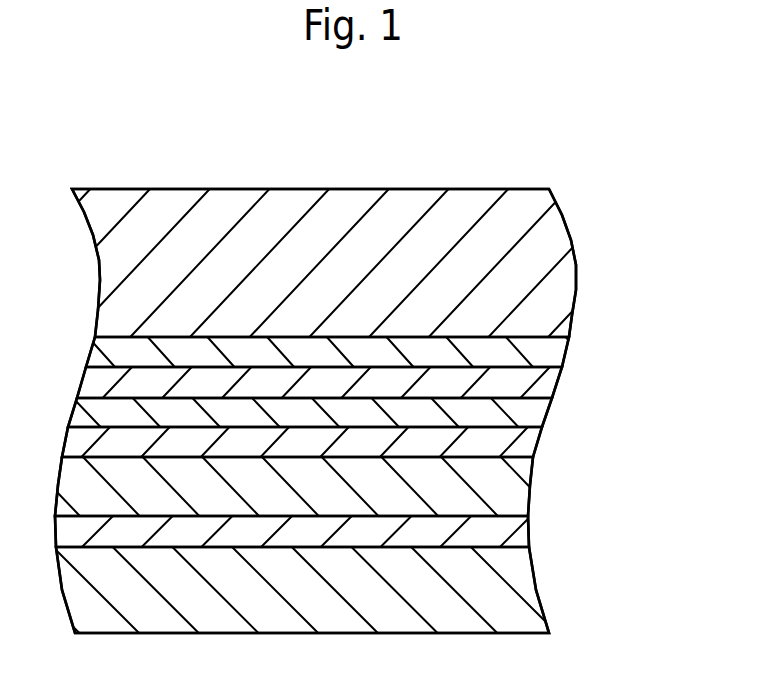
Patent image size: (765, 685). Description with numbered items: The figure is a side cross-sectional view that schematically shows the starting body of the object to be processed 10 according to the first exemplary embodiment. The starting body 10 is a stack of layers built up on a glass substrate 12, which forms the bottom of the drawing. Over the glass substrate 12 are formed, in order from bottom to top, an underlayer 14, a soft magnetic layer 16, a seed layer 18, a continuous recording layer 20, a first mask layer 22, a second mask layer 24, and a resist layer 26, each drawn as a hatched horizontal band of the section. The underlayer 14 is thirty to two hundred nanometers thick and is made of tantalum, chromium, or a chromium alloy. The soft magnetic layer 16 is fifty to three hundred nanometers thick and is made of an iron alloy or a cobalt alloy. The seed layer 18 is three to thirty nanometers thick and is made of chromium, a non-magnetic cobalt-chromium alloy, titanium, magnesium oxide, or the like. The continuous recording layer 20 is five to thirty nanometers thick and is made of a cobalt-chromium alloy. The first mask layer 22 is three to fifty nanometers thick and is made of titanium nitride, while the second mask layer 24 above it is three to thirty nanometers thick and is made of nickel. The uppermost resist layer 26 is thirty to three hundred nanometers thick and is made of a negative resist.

The starting body of the object to be processed 10 is at (370, 152).
The glass substrate 12 is at (534, 580).
The underlayer 14 is at (528, 532).
The soft magnetic layer 16 is at (529, 490).
The seed layer 18 is at (538, 443).
The continuous recording layer 20 is at (547, 412).
The first mask layer 22 is at (557, 382).
The second mask layer 24 is at (567, 352).
The resist layer 26 is at (574, 258).